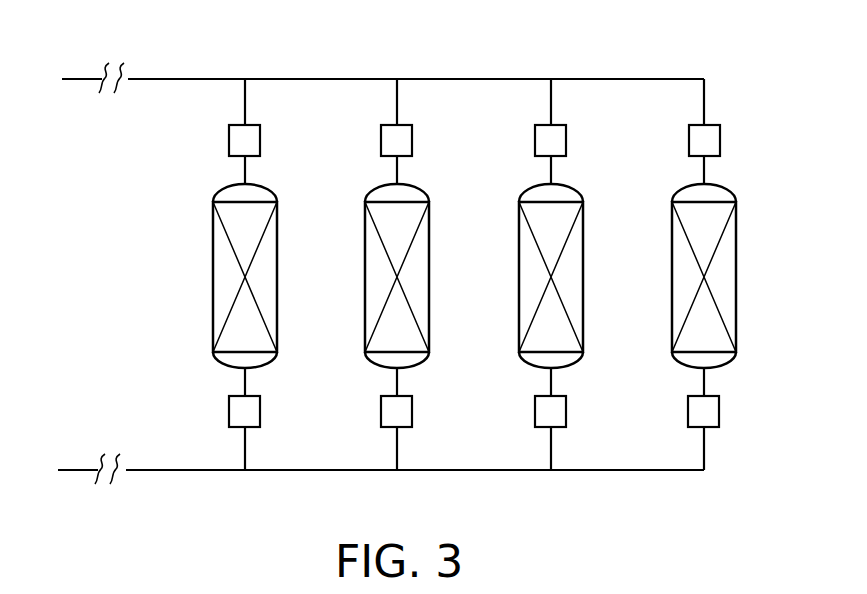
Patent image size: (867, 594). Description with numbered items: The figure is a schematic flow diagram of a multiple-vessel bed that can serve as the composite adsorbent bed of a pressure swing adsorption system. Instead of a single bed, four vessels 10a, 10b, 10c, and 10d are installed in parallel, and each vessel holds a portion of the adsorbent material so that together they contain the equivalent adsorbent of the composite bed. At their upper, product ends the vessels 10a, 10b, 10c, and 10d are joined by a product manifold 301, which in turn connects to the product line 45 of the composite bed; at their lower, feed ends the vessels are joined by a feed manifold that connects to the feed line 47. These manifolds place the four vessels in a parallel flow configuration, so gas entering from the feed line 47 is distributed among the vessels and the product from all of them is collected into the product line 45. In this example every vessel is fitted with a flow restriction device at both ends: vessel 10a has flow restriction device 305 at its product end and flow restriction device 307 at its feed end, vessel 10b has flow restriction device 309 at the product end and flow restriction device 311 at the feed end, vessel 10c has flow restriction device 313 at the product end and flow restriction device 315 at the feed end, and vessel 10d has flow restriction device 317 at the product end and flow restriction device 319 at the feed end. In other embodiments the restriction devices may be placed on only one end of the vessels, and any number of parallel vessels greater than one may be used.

The vessel 10a is at (277, 285).
The vessel 10b is at (429, 287).
The vessel 10c is at (583, 282).
The vessel 10d is at (736, 290).
The product line 45 is at (80, 78).
The feed line 47 is at (80, 470).
The product manifold 301 is at (475, 78).
The flow restriction device 305 is at (229, 135).
The flow restriction device 307 is at (226, 419).
The flow restriction device 309 is at (381, 145).
The flow restriction device 311 is at (381, 408).
The flow restriction device 313 is at (535, 145).
The flow restriction device 315 is at (535, 420).
The flow restriction device 317 is at (689, 145).
The flow restriction device 319 is at (688, 410).